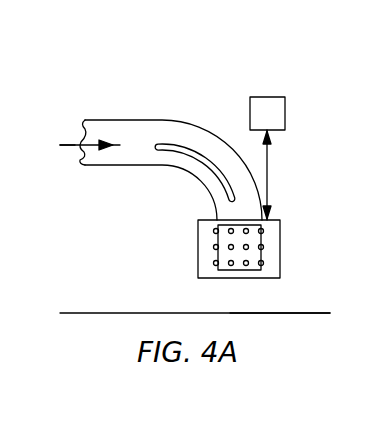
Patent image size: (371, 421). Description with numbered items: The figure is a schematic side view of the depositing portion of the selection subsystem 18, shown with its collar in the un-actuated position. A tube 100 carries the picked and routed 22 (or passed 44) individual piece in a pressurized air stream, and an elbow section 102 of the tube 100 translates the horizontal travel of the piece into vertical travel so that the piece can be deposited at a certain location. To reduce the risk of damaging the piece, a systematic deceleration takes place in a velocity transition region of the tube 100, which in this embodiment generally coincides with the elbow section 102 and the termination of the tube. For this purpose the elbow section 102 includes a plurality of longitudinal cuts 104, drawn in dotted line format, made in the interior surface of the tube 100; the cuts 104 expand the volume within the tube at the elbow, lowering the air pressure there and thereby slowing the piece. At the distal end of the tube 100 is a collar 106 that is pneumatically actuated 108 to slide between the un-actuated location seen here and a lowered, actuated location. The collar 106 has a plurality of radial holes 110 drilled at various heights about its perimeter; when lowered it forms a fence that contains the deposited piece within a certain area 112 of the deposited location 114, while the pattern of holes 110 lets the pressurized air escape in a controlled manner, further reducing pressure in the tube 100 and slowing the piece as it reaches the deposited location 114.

The selection subsystem 18 is at (89, 104).
The routed individual piece 22 is at (73, 150).
The passed individual piece 44 is at (73, 140).
The tube 100 is at (118, 120).
The elbow section 102 is at (168, 189).
The longitudinal cuts 104 is at (198, 146).
The collar 106 is at (280, 238).
The pneumatic actuator 108 is at (268, 97).
The radial holes 110 is at (218, 245).
The area 112 is at (271, 302).
The deposited location 114 is at (107, 313).